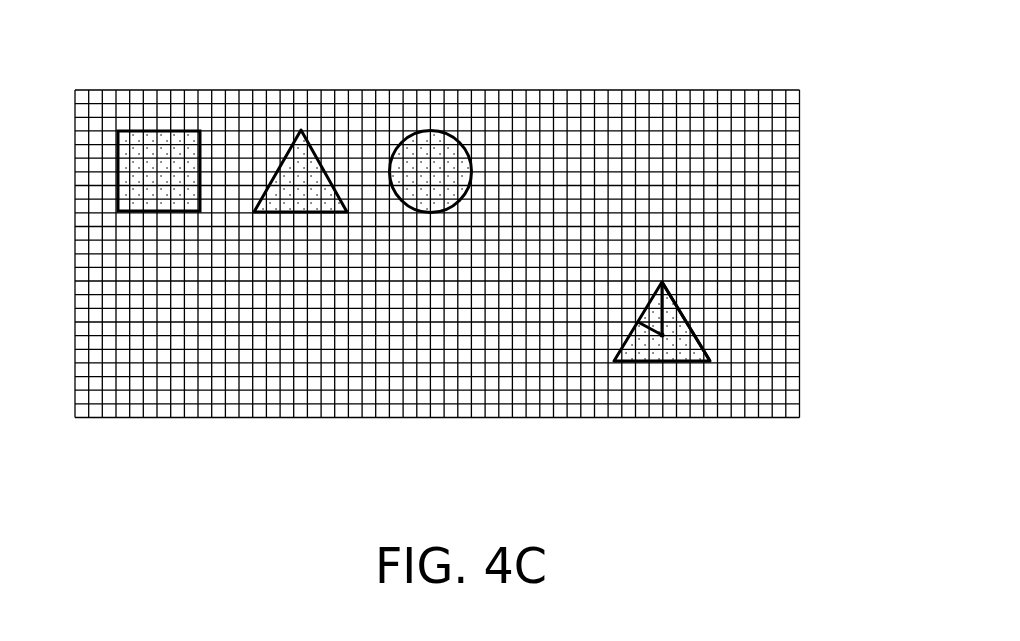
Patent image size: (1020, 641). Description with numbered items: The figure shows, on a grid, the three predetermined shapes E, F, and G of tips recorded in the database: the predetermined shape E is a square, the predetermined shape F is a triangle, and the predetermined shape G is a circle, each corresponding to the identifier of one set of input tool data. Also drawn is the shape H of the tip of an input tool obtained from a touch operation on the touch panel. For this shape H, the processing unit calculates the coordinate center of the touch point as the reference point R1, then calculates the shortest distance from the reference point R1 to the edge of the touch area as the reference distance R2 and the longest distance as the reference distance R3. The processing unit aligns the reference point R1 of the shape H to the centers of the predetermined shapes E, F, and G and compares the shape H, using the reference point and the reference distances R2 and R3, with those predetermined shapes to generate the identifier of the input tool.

The predetermined shape of tip E is at (165, 130).
The predetermined shape of tip F is at (301, 129).
The predetermined shape of tip G is at (430, 130).
The shape of the tip H is at (700, 349).
The reference point R1 is at (663, 362).
The reference distance R2 is at (647, 326).
The reference distance R3 is at (667, 297).